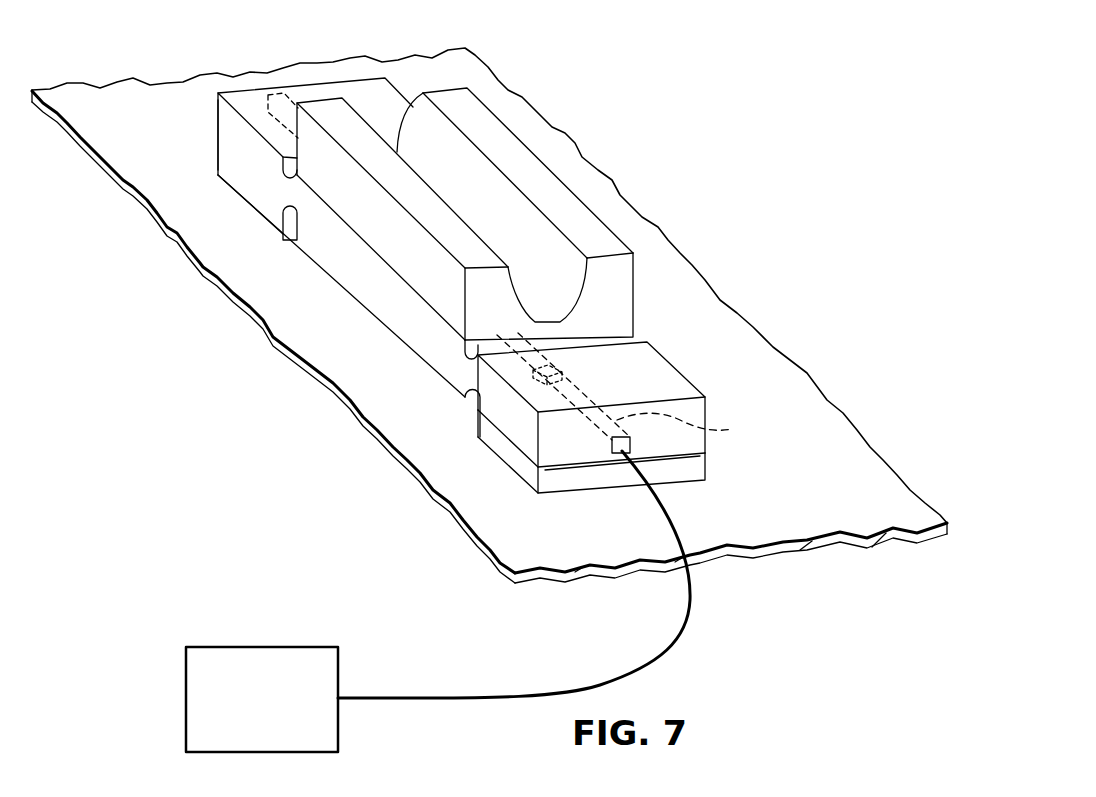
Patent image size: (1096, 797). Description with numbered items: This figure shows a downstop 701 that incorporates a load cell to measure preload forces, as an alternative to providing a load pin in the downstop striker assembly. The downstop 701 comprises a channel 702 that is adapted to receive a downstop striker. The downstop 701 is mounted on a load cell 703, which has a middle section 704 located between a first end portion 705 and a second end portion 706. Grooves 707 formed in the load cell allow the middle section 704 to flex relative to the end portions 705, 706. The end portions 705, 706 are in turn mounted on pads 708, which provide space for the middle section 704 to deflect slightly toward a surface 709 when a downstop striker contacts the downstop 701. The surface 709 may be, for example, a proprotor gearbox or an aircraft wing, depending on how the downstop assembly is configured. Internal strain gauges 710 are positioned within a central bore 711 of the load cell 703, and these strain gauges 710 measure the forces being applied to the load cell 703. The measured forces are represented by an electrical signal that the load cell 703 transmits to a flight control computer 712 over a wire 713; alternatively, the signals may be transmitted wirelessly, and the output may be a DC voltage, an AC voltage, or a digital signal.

The downstop 701 is at (588, 230).
The channel 702 is at (456, 156).
The load cell 703 is at (700, 445).
The middle section 704 is at (423, 338).
The end portion 705 is at (248, 100).
The end portion 706 is at (677, 384).
The grooves 707 is at (284, 173).
The pads 708 is at (222, 167).
The surface 709 is at (852, 442).
The internal strain gauges 710 is at (557, 354).
The central bore 711 is at (697, 426).
The flight control computer 712 is at (262, 645).
The wire 713 is at (468, 695).